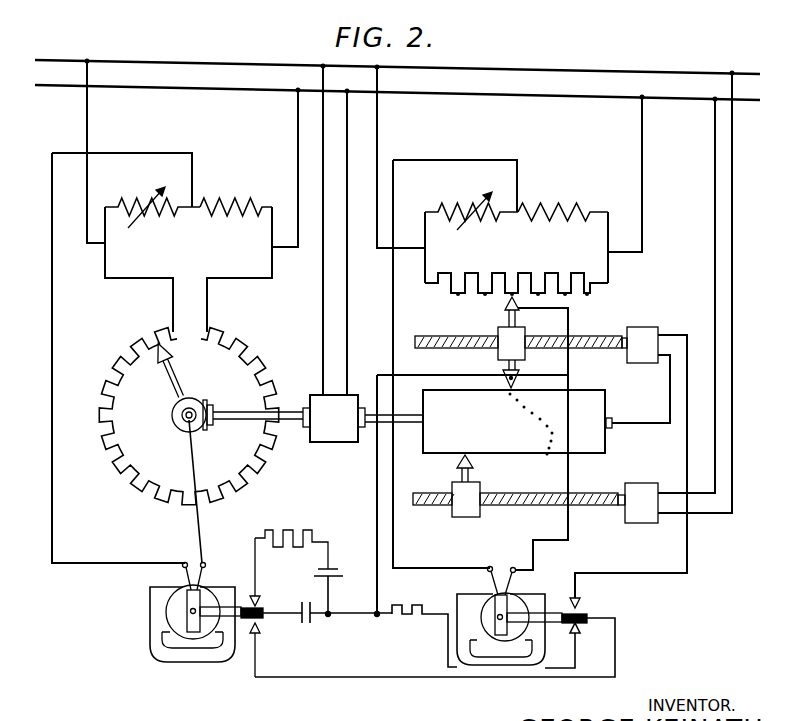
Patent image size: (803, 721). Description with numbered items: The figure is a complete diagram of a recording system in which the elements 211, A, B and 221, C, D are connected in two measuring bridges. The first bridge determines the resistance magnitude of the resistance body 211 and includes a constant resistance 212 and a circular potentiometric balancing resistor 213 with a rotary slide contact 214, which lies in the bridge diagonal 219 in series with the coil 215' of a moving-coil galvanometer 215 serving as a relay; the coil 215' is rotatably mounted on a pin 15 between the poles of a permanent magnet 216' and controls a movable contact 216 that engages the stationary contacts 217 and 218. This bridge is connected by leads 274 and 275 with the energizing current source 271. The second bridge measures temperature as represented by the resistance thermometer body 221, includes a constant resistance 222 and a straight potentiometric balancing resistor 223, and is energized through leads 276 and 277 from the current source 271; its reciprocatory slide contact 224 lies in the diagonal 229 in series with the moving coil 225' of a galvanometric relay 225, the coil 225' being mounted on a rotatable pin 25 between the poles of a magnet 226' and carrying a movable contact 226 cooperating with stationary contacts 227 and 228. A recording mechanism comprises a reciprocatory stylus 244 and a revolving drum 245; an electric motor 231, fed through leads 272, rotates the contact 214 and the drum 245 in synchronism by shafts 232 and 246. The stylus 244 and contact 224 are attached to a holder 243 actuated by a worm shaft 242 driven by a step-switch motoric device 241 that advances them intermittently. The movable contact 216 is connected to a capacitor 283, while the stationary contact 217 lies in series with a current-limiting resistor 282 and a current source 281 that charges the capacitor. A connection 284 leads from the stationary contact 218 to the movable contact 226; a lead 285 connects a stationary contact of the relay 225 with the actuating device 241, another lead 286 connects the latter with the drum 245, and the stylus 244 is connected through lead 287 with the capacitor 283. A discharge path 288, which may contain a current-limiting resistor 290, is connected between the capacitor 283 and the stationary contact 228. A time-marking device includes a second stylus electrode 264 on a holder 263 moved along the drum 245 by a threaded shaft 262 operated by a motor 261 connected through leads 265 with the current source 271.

The energizing current source 271 is at (604, 75).
The lead 274 is at (87, 124).
The lead 275 is at (298, 128).
The lead 276 is at (378, 118).
The lead 277 is at (642, 133).
The leads 265 is at (722, 266).
The leads 272 is at (345, 300).
The diagonal 229 is at (392, 299).
The resistance body 211 is at (135, 203).
The constant resistance 212 is at (233, 203).
The resistance thermometer body 221 is at (450, 205).
The constant resistance 222 is at (559, 212).
The potentiometric balancing resistor 223 is at (455, 294).
The reciprocatory slide contact 224 is at (503, 305).
The worm shaft 242 is at (447, 348).
The holder 243 is at (508, 348).
The reciprocatory stylus 244 is at (516, 384).
The drum 245 is at (587, 404).
The motoric device 241 is at (630, 330).
The lead 286 is at (640, 422).
The lead 285 is at (688, 548).
The second stylus electrode 264 is at (476, 462).
The holder 263 is at (457, 511).
The threaded shaft 262 is at (518, 507).
The motor 261 is at (635, 513).
The electric motor 231 is at (330, 430).
The shaft 232 is at (290, 413).
The shaft 246 is at (371, 426).
The lead 287 is at (377, 520).
The potentiometric balancing resistor 213 is at (117, 365).
The rotary slide contact 214 is at (177, 378).
The bridge diagonal 219 is at (84, 568).
The pin 15 is at (197, 607).
The moving-coil galvanometer 215 is at (179, 612).
The coil 215' is at (173, 624).
The permanent magnet 216' is at (192, 658).
The movable contact 216 is at (273, 618).
The stationary contact 217 is at (258, 604).
The stationary contact 218 is at (258, 628).
The current-limiting resistor 282 is at (283, 530).
The current source 281 is at (336, 573).
The capacitor 283 is at (305, 623).
The current-limiting resistor 290 is at (400, 612).
The discharge path 288 is at (448, 665).
The connection 284 is at (378, 680).
The rotatable pin 25 is at (498, 612).
The galvanometric relay 225 is at (568, 621).
The moving coil 225' is at (478, 629).
The magnet 226' is at (501, 669).
The movable contact 226 is at (606, 606).
The stationary contact 227 is at (573, 603).
The stationary contact 228 is at (580, 628).
The terminal A is at (100, 250).
The terminal B is at (194, 204).
The terminal C is at (423, 250).
The terminal D is at (518, 207).